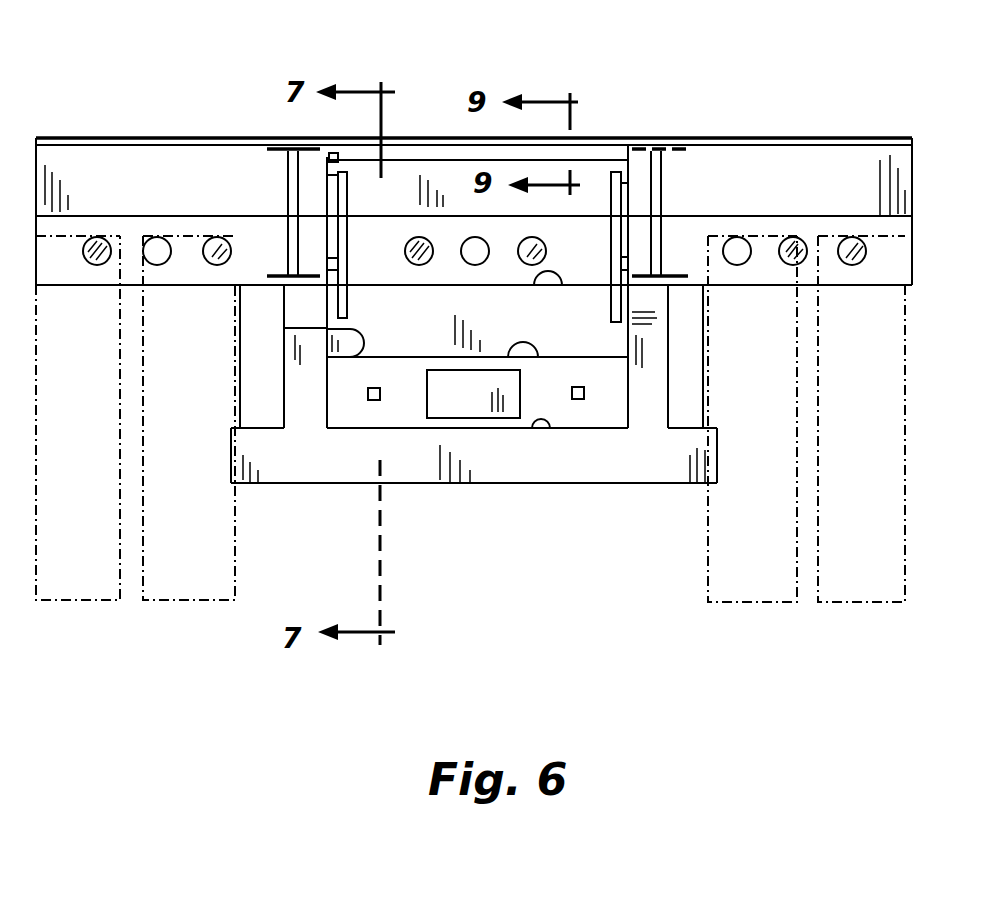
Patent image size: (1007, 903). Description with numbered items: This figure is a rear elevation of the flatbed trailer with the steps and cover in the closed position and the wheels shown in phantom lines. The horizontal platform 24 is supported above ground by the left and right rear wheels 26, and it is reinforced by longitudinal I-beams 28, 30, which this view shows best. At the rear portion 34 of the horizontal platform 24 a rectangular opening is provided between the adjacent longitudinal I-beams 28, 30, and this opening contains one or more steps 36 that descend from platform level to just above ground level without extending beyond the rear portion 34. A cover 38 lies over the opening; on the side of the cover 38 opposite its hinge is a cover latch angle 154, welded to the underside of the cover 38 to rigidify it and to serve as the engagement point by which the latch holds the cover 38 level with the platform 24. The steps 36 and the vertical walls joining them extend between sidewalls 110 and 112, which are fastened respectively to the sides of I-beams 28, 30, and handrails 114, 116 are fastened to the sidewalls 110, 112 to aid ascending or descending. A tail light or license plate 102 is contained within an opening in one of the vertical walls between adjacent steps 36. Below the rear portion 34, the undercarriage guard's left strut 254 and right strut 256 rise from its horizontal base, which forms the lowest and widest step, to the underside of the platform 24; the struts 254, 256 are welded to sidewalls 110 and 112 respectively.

The horizontal platform 24 is at (127, 138).
The rear wheels 26 is at (73, 607).
The longitudinal I-beam 28 is at (290, 152).
The longitudinal I-beam 30 is at (662, 193).
The rear portion 34 is at (817, 168).
The steps 36 is at (558, 280).
The cover 38 is at (590, 136).
The tail light or license plate 102 is at (478, 402).
The sidewall 110 is at (360, 345).
The sidewall 112 is at (648, 341).
The handrail 114 is at (350, 275).
The handrail 116 is at (613, 180).
The cover latch angle 154 is at (450, 150).
The left strut 254 is at (298, 400).
The right strut 256 is at (657, 378).